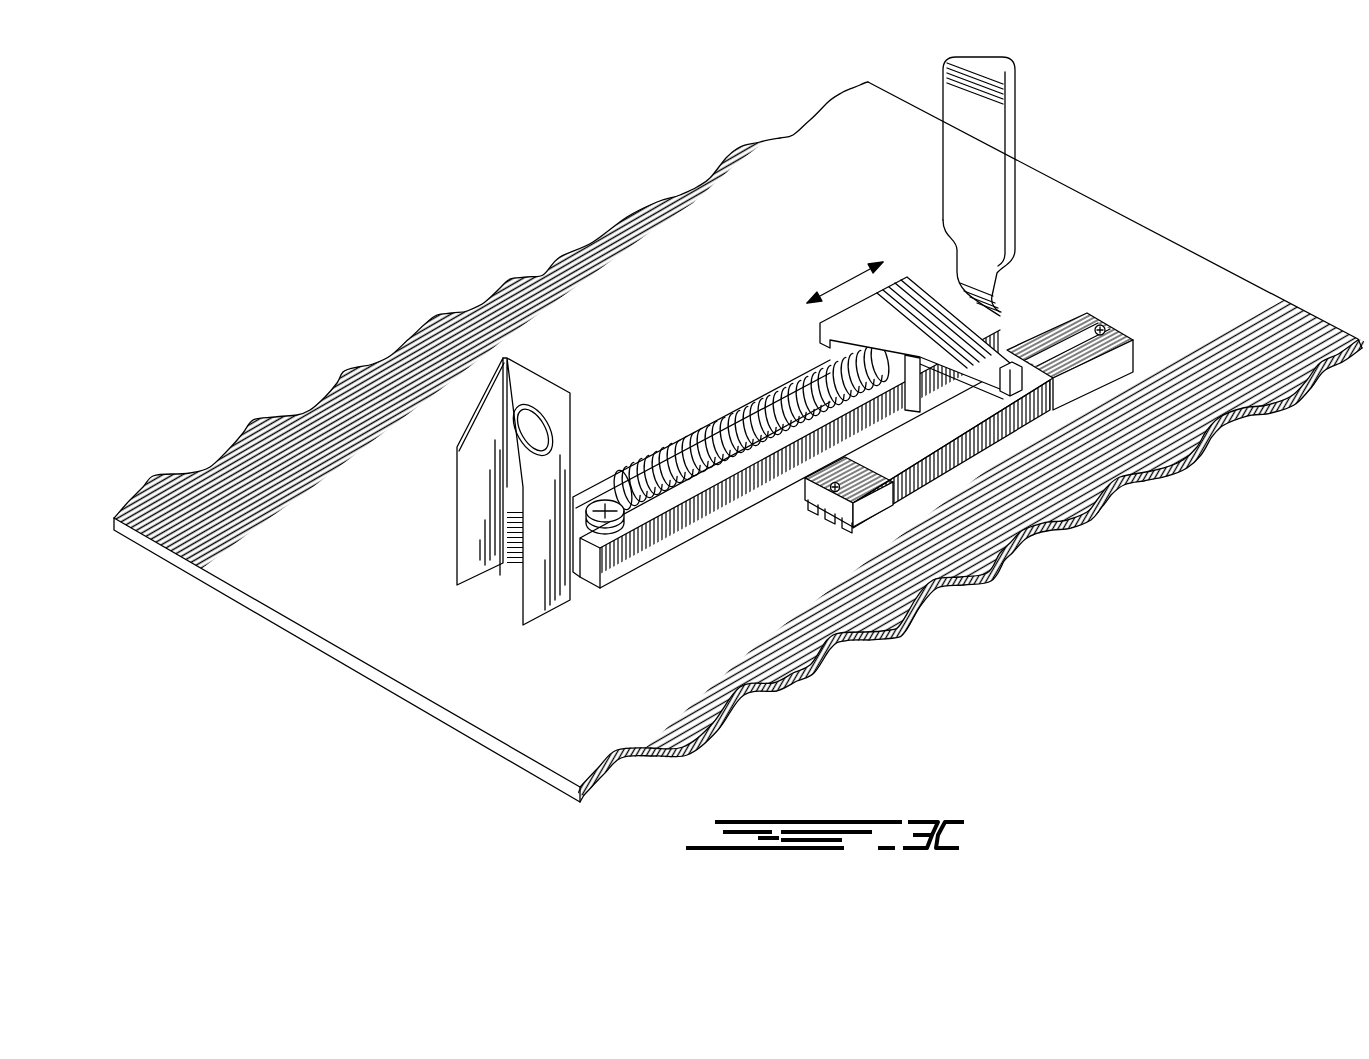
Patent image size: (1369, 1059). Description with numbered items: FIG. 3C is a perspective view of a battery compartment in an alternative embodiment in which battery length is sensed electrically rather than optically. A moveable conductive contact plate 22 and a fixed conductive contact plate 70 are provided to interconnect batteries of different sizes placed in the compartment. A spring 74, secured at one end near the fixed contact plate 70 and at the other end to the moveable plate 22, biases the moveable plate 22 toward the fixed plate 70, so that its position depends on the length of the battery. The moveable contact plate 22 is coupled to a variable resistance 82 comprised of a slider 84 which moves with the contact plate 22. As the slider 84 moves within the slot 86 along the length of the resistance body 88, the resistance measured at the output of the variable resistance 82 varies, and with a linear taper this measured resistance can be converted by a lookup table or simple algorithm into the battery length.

The moveable conductive contact plate 22 is at (973, 135).
The fixed conductive contact plate 70 is at (540, 390).
The spring 74 is at (715, 410).
The variable resistance 82 is at (1118, 342).
The slider 84 is at (1043, 398).
The slot 86 is at (887, 456).
The resistance body 88 is at (907, 490).